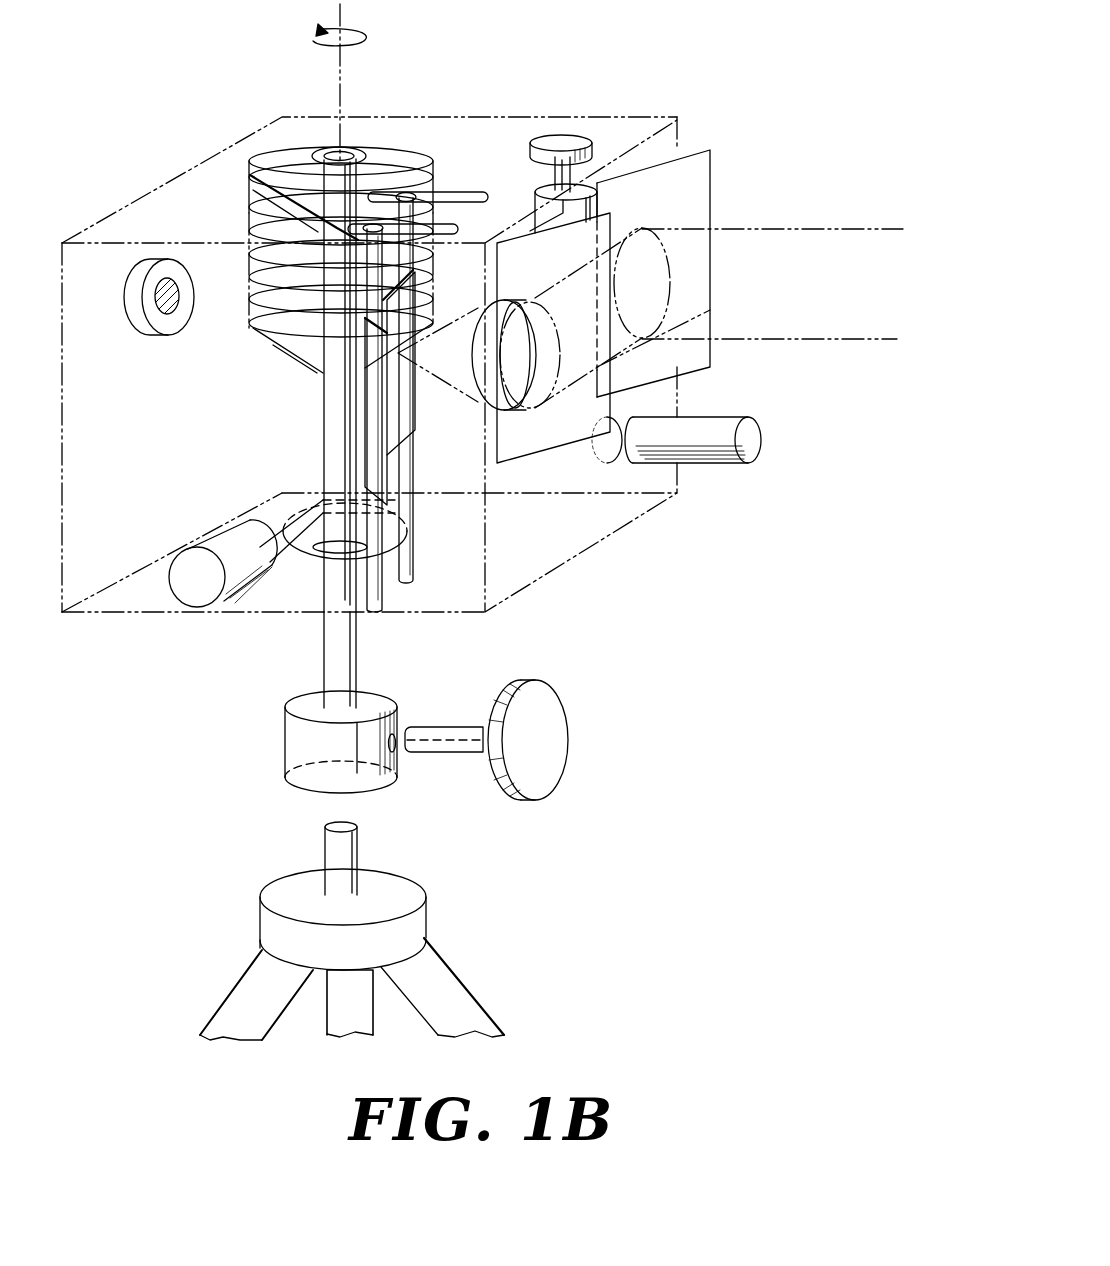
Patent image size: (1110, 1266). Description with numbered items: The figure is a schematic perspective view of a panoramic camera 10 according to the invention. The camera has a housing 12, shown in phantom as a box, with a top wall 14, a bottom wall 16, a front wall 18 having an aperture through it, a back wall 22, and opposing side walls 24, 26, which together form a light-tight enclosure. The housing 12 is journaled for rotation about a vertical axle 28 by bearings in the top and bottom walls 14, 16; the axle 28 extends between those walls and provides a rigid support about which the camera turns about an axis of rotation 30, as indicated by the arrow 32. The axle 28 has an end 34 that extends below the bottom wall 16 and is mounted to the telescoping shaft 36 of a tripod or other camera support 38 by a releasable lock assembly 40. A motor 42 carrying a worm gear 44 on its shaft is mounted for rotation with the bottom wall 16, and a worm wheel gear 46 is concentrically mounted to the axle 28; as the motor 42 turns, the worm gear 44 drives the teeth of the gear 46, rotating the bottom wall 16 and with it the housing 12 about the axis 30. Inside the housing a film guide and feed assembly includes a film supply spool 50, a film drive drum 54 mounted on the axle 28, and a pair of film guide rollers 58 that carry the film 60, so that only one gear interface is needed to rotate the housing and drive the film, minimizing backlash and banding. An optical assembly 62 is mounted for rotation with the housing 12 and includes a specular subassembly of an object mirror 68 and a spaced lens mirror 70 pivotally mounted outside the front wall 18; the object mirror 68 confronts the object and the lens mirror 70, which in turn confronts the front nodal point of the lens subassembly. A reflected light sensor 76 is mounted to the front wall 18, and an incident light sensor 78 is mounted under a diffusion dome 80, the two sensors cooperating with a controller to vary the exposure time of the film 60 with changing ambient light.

The panoramic camera 10 is at (712, 115).
The housing 12 is at (356, 113).
The top wall 14 is at (457, 137).
The bottom wall 16 is at (560, 543).
The front wall 18 is at (660, 400).
The back wall 22 is at (90, 393).
The side wall 24 is at (100, 525).
The side wall 26 is at (627, 130).
The vertical axle 28 is at (327, 420).
The axis of rotation 30 is at (352, 12).
The arrow 32 is at (310, 43).
The end of axle 34 is at (333, 656).
The telescoping shaft 36 is at (352, 850).
The camera support 38 is at (280, 929).
The releasable lock assembly 40 is at (422, 712).
The motor 42 is at (200, 568).
The worm gear 44 is at (276, 520).
The worm wheel gear 46 is at (387, 520).
The film supply spool 50 is at (600, 188).
The film drive drum 54 is at (250, 176).
The film guide rollers 58 is at (440, 207).
The film 60 is at (248, 210).
The optical assembly 62 is at (742, 191).
The object mirror 68 is at (693, 213).
The lens mirror 70 is at (537, 443).
The reflected light sensor 76 is at (713, 463).
The incident light sensor 78 is at (157, 305).
The diffusion dome 80 is at (136, 276).